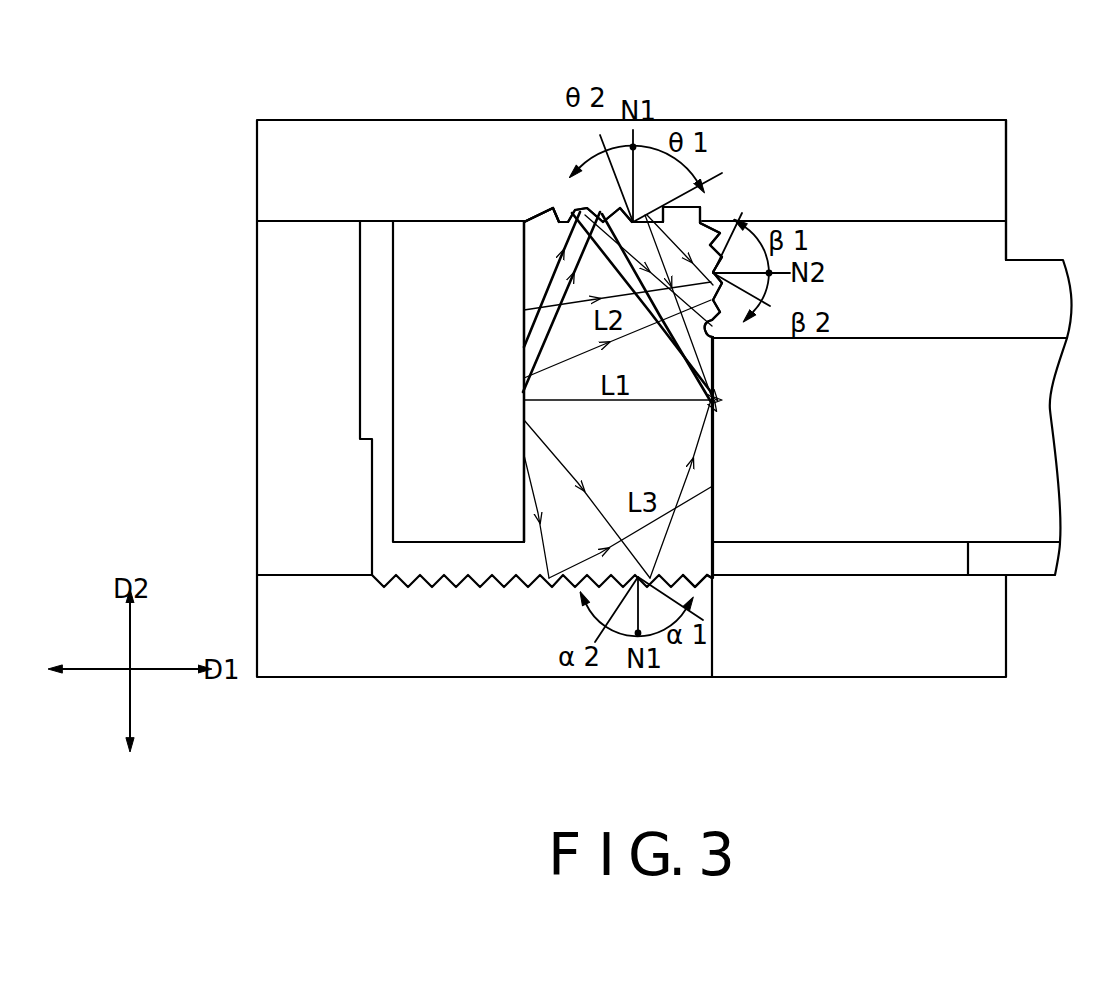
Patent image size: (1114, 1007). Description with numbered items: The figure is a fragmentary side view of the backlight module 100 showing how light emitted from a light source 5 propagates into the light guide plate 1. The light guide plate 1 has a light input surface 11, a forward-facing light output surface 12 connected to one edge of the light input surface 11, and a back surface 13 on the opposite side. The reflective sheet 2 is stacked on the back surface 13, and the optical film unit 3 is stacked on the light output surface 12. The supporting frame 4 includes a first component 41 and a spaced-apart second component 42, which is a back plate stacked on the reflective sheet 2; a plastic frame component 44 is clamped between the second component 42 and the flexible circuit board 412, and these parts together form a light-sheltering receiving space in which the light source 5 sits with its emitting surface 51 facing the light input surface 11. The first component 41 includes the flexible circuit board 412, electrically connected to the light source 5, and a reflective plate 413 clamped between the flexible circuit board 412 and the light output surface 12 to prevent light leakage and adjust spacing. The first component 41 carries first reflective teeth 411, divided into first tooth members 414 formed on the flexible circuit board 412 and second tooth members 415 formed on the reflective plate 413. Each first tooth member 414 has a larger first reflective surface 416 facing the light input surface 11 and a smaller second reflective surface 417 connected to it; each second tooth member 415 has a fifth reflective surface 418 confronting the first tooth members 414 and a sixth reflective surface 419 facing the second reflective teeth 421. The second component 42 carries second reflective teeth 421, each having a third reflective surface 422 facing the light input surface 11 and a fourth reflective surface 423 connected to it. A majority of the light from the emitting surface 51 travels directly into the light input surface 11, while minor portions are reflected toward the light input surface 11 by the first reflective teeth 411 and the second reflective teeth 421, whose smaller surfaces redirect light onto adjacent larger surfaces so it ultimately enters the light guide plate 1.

The backlight module 100 is at (172, 72).
The supporting frame 4 is at (232, 175).
The flexible circuit board 412 is at (468, 203).
The reflective plate 413 is at (888, 258).
The optical film unit 3 is at (1017, 290).
The light output surface 12 is at (1040, 338).
The light guide plate 1 is at (1005, 495).
The light input surface 11 is at (712, 460).
The back surface 13 is at (968, 577).
The reflective sheet 2 is at (853, 550).
The plastic frame component 44 is at (307, 469).
The second component 42 is at (333, 648).
The light source 5 is at (452, 532).
The emitting surface 51 is at (523, 532).
The second reflective teeth 421 is at (567, 583).
The third reflective surface 422 is at (712, 576).
The fourth reflective surface 423 is at (680, 573).
The first component 41 is at (670, 110).
The first reflective teeth 411 is at (563, 222).
The second reflective surface 417 is at (553, 210).
The first reflective surface 416 is at (569, 208).
The first tooth members 414 is at (578, 205).
The second tooth members 415 is at (708, 222).
The fifth reflective surface 418 is at (713, 345).
The sixth reflective surface 419 is at (713, 338).